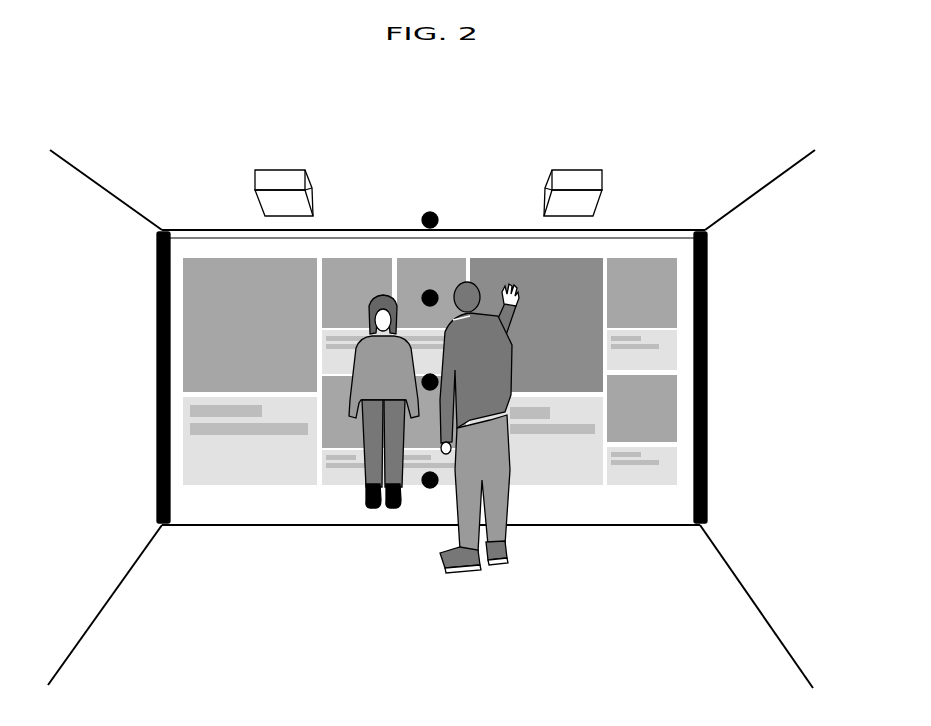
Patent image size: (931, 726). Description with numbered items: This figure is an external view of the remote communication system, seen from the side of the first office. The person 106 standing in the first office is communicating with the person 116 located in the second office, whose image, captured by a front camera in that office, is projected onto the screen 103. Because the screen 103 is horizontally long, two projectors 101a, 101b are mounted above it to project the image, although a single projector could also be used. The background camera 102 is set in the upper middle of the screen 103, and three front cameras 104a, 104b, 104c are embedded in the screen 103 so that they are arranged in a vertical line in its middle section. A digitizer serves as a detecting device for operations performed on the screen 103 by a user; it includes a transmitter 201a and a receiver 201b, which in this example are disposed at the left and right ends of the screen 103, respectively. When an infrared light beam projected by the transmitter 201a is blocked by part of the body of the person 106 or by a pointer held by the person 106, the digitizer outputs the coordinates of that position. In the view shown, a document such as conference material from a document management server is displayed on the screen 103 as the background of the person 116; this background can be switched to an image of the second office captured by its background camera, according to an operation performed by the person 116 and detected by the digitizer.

The projector 101a is at (314, 203).
The projector 101b is at (603, 198).
The background camera 102 is at (431, 212).
The screen 103 is at (634, 517).
The front camera 104a is at (431, 290).
The front camera 104b is at (430, 390).
The front camera 104c is at (429, 488).
The person 106 is at (500, 530).
The person 116 is at (364, 303).
The transmitter 201a is at (157, 293).
The receiver 201b is at (707, 334).